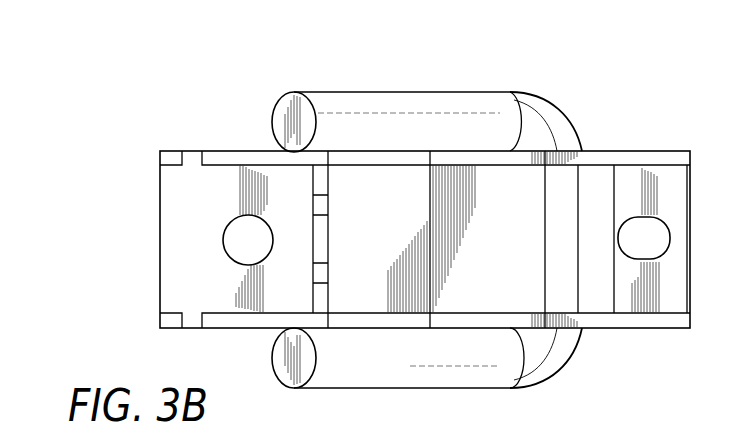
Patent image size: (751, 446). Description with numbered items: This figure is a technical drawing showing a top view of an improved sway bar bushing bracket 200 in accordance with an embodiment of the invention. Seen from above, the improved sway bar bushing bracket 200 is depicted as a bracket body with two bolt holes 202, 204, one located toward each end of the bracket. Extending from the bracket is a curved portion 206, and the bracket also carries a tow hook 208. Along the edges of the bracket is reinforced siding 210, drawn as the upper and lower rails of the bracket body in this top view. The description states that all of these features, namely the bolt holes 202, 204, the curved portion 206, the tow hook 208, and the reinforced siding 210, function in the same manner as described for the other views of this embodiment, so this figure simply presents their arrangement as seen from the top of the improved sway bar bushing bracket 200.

The improved sway bar bushing bracket 200 is at (627, 115).
The bolt hole 202 is at (223, 238).
The bolt hole 204 is at (670, 238).
The curved portion 206 is at (403, 222).
The tow hook 208 is at (423, 377).
The reinforced siding 210 is at (636, 151).